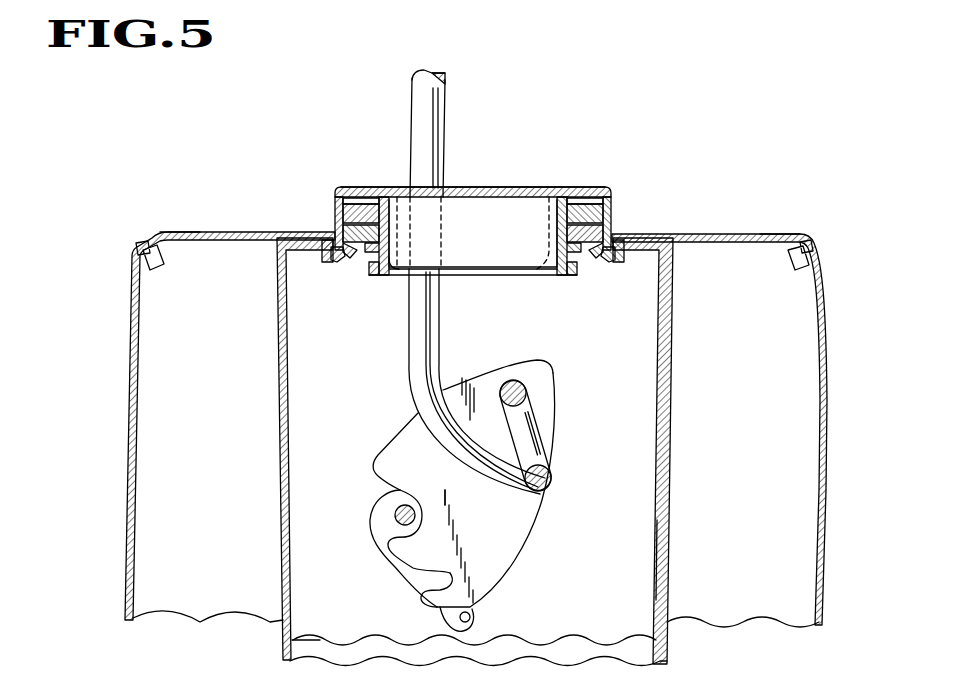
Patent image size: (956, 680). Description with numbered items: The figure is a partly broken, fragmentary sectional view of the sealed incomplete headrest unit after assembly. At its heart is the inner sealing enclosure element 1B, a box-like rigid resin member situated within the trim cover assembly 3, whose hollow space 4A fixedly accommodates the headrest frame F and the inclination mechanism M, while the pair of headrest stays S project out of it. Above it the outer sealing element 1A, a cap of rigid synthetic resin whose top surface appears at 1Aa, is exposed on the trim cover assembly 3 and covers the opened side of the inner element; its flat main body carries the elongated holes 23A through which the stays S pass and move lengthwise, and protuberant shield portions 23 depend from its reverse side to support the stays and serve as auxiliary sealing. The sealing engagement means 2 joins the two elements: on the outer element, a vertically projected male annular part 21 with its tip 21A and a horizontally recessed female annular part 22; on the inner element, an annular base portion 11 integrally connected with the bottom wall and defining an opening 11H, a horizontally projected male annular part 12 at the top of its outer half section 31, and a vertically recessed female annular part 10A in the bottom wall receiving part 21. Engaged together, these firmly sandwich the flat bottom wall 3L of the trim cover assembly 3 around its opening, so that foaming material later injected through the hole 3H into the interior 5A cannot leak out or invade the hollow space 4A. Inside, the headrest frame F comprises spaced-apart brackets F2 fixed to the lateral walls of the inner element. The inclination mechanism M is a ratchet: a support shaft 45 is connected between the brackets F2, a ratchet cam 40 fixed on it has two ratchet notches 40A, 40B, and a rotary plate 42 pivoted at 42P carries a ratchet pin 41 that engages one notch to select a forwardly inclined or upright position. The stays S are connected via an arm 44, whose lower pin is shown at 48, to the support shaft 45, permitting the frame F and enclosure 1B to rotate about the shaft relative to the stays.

The outer sealing element 1A is at (473, 142).
The top surface of lid 1Aa is at (463, 190).
The inner sealing enclosure element 1B is at (678, 430).
The sealing engagement means 2 is at (222, 85).
The trim cover assembly 3 is at (119, 403).
The hole 3H is at (745, 234).
The flat bottom wall 3L is at (190, 231).
The interior 5A is at (215, 457).
The vertically recessed female annular part 10A is at (334, 260).
The annular base portion 11 is at (574, 265).
The opening 11H is at (403, 277).
The horizontally projected male annular part 12 is at (357, 187).
The vertically projected male annular part 21 is at (338, 215).
The seal tip 21A is at (333, 246).
The horizontally recessed female annular part 22 is at (333, 230).
The protuberant shield portion 23 is at (480, 220).
The elongated hole 23A is at (548, 260).
The cavity cylinder wall 31 is at (373, 195).
The hollow space 4A is at (490, 357).
The ratchet cam 40 is at (513, 540).
The ratchet notch 40A is at (417, 580).
The ratchet notch 40B is at (390, 547).
The ratchet pin 41 is at (396, 511).
The rotary plate 42 is at (377, 523).
The pivot 42P is at (475, 617).
The arm 44 is at (553, 437).
The support shaft 45 is at (527, 388).
The link pin 48 is at (552, 487).
The headrest stay S is at (417, 104).
The headrest frame F is at (333, 432).
The bracket F2 is at (628, 577).
The inclination mechanism M is at (617, 410).